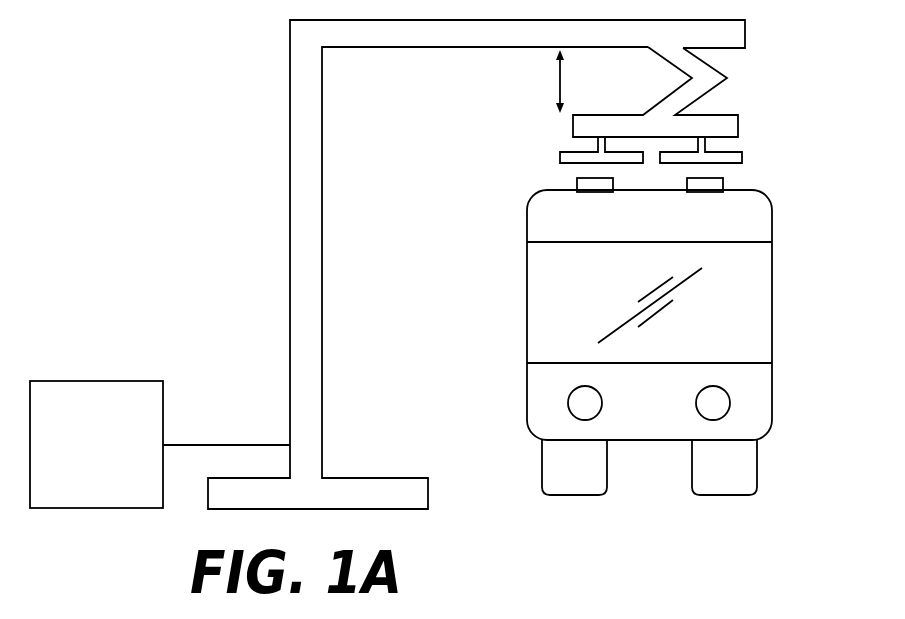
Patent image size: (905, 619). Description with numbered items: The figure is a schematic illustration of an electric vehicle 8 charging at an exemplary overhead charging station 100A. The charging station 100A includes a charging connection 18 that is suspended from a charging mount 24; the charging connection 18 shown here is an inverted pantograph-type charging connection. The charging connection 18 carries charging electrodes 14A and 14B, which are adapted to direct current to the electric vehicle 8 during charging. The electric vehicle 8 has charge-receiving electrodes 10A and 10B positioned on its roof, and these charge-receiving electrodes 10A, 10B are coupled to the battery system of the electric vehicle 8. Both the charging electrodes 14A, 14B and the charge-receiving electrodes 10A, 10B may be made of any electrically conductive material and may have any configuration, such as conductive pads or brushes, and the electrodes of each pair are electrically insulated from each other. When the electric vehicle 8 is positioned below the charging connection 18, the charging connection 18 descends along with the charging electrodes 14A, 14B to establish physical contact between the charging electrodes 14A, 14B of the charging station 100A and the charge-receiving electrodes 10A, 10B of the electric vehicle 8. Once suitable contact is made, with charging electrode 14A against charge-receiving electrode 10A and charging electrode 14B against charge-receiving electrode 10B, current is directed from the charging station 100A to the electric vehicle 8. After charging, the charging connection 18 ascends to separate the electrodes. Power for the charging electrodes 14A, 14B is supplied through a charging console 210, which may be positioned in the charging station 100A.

The charging station 100A is at (156, 253).
The charging mount 24 is at (267, 172).
The charging connection 18 is at (750, 83).
The charging electrode 14A is at (723, 150).
The charging electrode 14B is at (567, 150).
The charge-receiving electrode 10A is at (708, 176).
The charge-receiving electrode 10B is at (578, 177).
The electric vehicle 8 is at (772, 305).
The charging console 210 is at (112, 484).